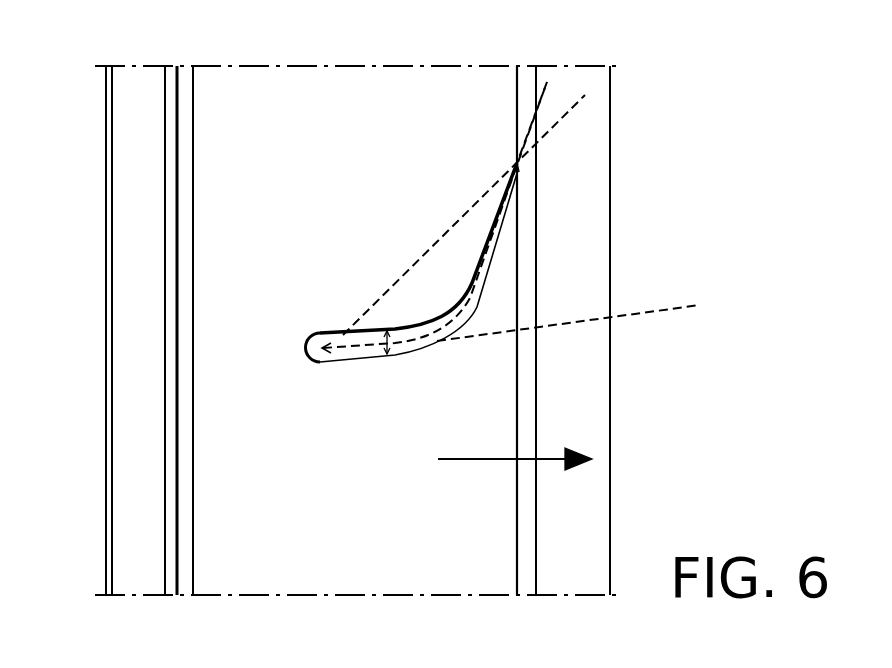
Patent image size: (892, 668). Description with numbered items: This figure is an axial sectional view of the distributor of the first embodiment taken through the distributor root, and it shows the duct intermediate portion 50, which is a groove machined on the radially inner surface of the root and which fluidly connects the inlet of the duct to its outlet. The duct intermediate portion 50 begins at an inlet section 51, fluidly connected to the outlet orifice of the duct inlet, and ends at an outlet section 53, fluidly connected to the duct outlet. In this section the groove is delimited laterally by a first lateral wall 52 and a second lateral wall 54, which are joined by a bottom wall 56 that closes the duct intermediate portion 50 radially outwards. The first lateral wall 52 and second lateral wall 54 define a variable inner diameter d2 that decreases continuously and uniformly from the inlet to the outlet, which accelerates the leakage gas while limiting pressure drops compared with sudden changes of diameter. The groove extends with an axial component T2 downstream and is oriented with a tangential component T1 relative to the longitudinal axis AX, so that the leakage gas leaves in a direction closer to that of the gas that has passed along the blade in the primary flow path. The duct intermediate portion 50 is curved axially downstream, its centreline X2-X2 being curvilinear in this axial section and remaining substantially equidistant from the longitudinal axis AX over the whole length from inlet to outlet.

The duct intermediate portion 50 is at (364, 275).
The inlet section 51 is at (305, 349).
The first lateral wall 52 is at (333, 338).
The outlet section 53 is at (517, 165).
The second lateral wall 54 is at (340, 331).
The bottom wall 56 is at (327, 366).
The inner diameter d2 is at (392, 342).
The longitudinal axis AX is at (497, 460).
The tangential component T1 is at (397, 280).
The axial component T2 is at (633, 313).
The centreline X2-X2 is at (547, 85).